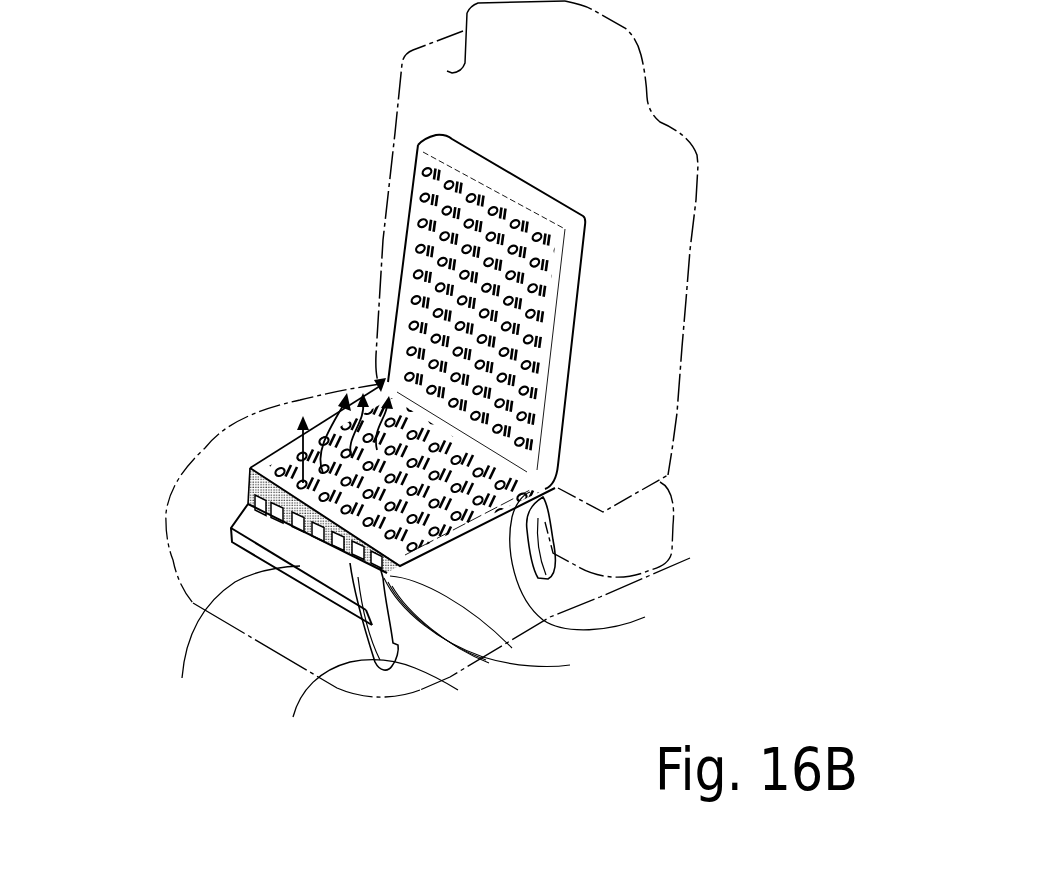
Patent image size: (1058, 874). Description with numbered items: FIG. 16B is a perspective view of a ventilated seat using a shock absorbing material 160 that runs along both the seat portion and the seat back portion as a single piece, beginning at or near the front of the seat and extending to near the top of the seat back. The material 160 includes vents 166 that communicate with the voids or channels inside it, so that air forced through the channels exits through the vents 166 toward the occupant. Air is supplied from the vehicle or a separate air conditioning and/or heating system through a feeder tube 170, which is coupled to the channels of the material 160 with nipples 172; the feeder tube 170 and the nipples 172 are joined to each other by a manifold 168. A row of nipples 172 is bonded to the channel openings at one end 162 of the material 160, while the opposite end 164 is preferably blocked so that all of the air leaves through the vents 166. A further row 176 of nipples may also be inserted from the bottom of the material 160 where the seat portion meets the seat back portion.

The material 160 is at (262, 465).
The end of the material 162 is at (232, 526).
The opposite end of the material 164 is at (433, 138).
The vents 166 is at (535, 287).
The manifold 168 is at (221, 647).
The feeder tube 170 is at (515, 654).
The nipples 172 is at (490, 617).
The row of nipples 176 is at (607, 561).